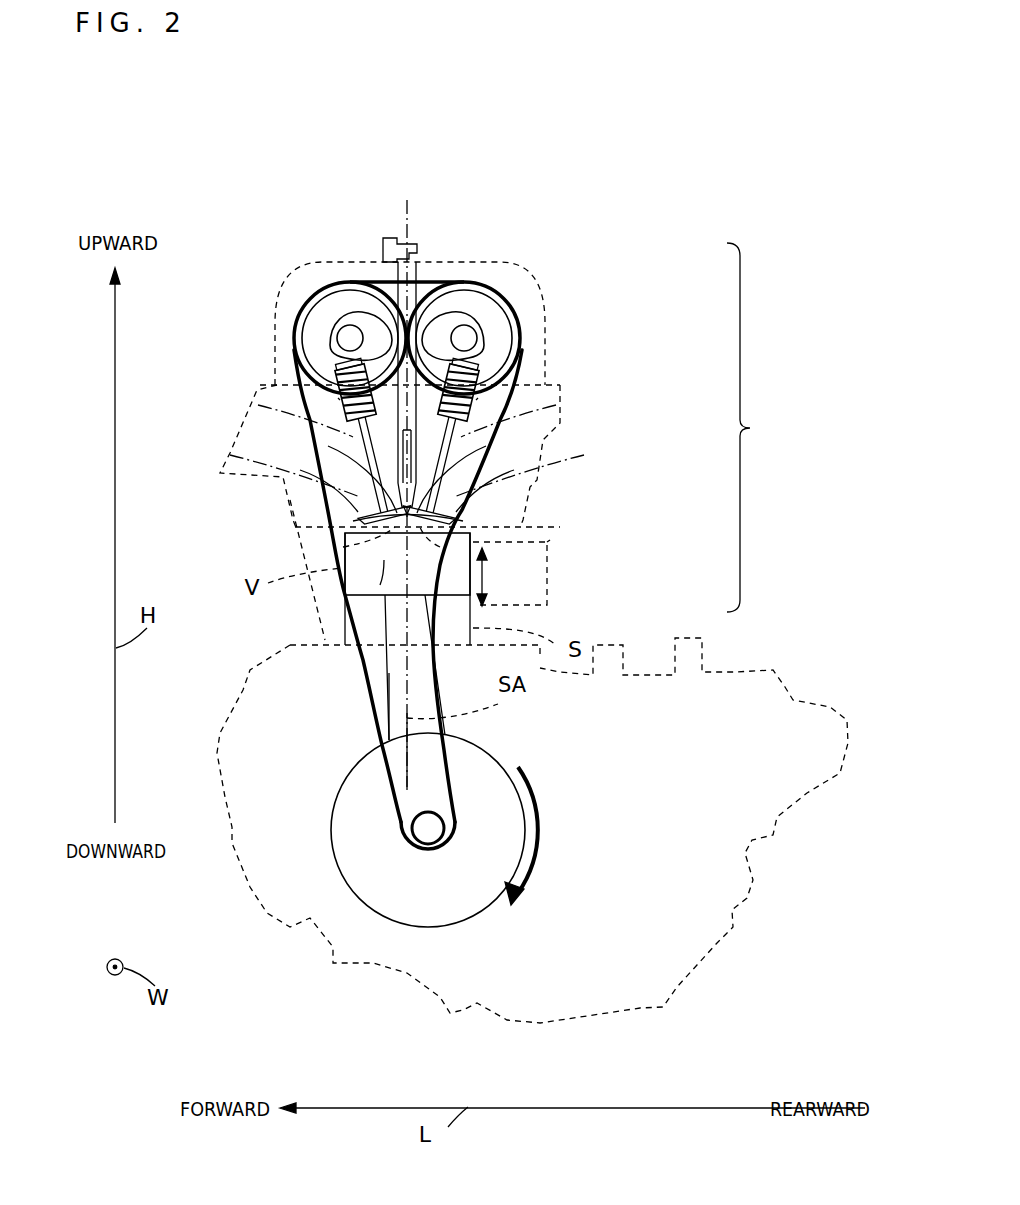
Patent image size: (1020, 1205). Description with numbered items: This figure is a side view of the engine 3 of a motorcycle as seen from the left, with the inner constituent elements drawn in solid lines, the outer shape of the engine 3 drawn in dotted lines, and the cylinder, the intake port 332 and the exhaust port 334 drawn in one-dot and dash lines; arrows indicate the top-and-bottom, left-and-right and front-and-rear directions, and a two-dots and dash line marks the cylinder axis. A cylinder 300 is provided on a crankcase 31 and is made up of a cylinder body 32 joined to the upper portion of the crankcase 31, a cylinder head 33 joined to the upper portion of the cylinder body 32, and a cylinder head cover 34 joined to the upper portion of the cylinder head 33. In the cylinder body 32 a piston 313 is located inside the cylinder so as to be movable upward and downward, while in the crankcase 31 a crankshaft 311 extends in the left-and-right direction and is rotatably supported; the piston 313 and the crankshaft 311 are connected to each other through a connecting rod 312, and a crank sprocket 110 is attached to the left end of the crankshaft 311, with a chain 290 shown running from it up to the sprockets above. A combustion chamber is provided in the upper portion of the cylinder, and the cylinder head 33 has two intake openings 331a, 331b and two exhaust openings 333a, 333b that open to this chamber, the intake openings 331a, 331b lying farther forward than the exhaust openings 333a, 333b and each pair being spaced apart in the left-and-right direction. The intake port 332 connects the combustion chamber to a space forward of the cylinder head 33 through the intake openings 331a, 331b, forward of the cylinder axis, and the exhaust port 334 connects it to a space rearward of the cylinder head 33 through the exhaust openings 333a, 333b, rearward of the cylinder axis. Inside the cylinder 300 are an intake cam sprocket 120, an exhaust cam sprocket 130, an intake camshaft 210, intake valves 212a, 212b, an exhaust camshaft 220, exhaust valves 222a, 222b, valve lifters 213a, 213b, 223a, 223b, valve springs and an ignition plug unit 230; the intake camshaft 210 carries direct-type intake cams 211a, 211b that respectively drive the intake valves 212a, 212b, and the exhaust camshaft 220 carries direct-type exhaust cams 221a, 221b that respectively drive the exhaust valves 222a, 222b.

The engine 3 is at (688, 155).
The crankcase 31 is at (733, 673).
The cylinder body 32 is at (550, 578).
The cylinder head 33 is at (543, 493).
The cylinder head cover 34 is at (433, 260).
The crank sprocket 110 is at (426, 806).
The intake cam sprocket 120 is at (358, 285).
The exhaust cam sprocket 130 is at (463, 283).
The intake camshaft 210 is at (342, 338).
The intake cam 211a is at (285, 222).
The intake cam 211b is at (357, 318).
The intake valve 212a is at (275, 440).
The intake valve 212b is at (362, 442).
The valve lifter 213a is at (260, 341).
The valve lifter 213b is at (342, 368).
The exhaust camshaft 220 is at (472, 336).
The exhaust cam 221a is at (533, 220).
The exhaust cam 221b is at (458, 318).
The exhaust valve 222a is at (541, 440).
The exhaust valve 222b is at (455, 440).
The valve lifter 223a is at (550, 357).
The valve lifter 223b is at (472, 372).
The ignition plug unit 230 is at (380, 258).
The cam chain 290 is at (362, 677).
The cylinder 300 is at (764, 427).
The crankshaft 311 is at (343, 833).
The connecting rod 312 is at (397, 692).
The piston 313 is at (380, 593).
The intake opening 331a is at (281, 542).
The intake opening 331b is at (343, 547).
The intake port 332 is at (253, 434).
The exhaust opening 333a is at (553, 525).
The exhaust opening 333b is at (550, 540).
The exhaust port 334 is at (560, 437).